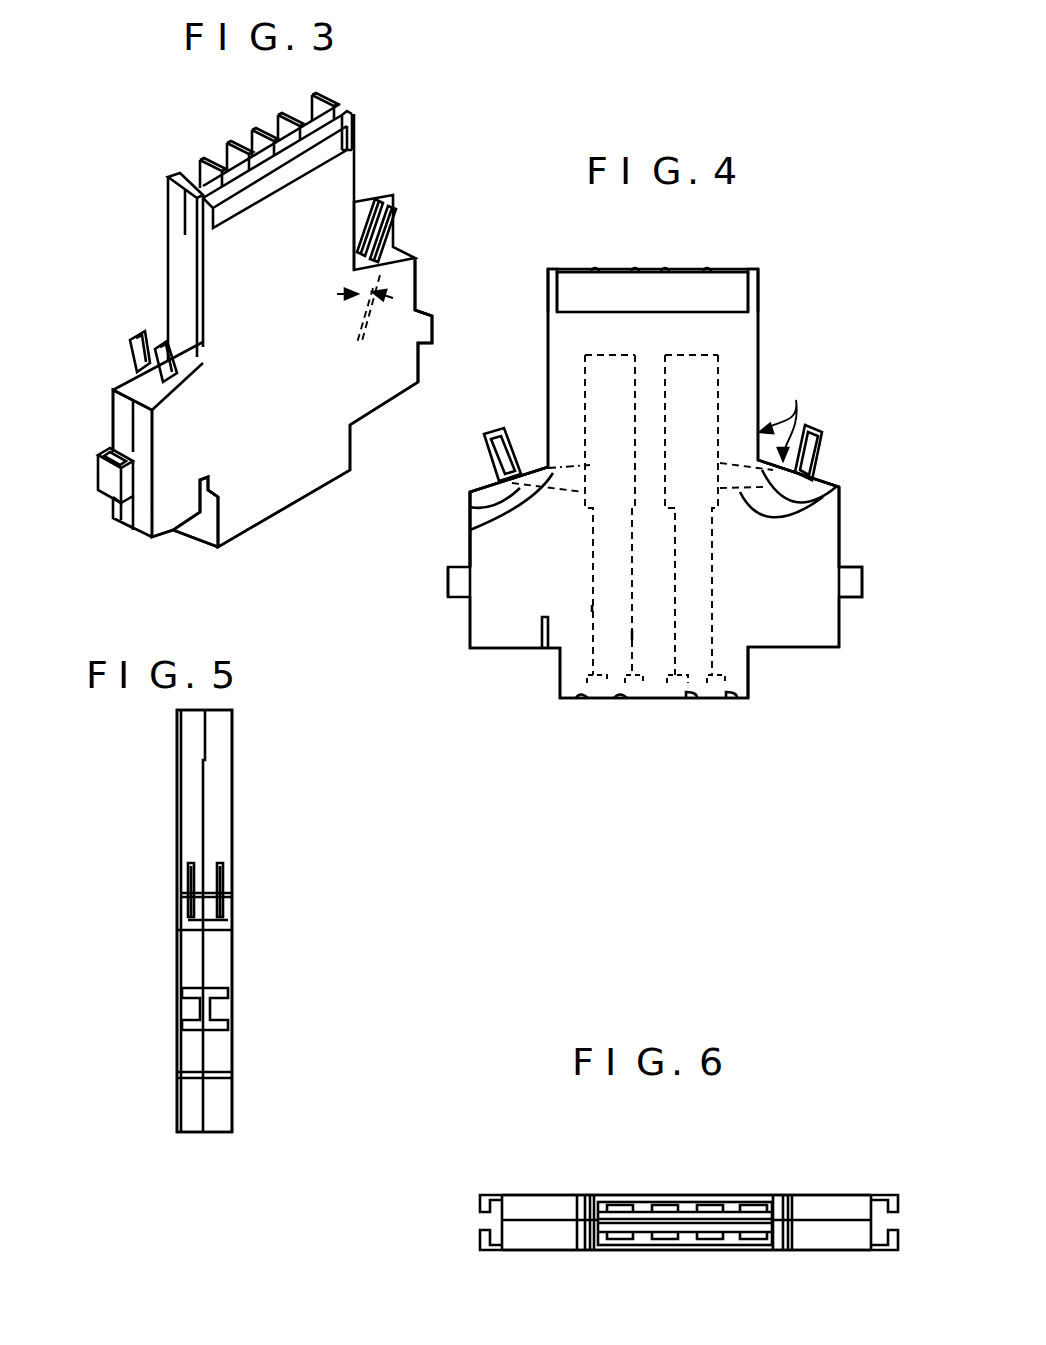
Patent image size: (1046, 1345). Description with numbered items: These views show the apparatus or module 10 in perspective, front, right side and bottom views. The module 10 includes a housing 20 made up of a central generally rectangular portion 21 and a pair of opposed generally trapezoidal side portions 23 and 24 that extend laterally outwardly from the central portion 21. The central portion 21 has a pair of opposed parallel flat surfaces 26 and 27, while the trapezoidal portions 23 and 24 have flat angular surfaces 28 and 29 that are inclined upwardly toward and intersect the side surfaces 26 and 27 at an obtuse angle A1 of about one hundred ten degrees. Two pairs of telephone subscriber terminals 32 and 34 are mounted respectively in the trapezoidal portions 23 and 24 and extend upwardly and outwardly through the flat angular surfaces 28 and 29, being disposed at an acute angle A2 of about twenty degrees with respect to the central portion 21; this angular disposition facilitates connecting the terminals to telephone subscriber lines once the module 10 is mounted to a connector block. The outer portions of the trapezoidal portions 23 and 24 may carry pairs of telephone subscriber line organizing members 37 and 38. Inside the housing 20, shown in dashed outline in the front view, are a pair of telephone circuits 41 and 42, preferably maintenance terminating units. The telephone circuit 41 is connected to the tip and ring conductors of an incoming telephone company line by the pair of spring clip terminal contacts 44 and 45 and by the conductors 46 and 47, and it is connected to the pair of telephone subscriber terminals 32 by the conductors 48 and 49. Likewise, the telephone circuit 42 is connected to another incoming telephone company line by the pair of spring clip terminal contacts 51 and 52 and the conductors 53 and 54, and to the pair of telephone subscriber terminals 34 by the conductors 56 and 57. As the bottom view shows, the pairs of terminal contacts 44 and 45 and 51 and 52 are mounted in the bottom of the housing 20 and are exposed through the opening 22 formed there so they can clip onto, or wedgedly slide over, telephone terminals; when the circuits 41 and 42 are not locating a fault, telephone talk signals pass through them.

In FIG. 3, the apparatus or module 10 is at (118, 203).
In FIG. 4, the apparatus or module 10 is at (810, 278).
In FIG. 5, the apparatus or module 10 is at (262, 742).
In FIG. 6, the apparatus or module 10 is at (858, 1170).
In FIG. 3, the housing 20 is at (420, 262).
In FIG. 4, the housing 20 is at (545, 361).
In FIG. 5, the housing 20 is at (170, 950).
In FIG. 6, the housing 20 is at (798, 1190).
In FIG. 3, the central generally rectangular portion 21 is at (297, 235).
In FIG. 4, the central generally rectangular portion 21 is at (735, 345).
In FIG. 6, the opening 22 is at (681, 1217).
In FIG. 3, the trapezoidal side portion 23 is at (180, 518).
In FIG. 4, the trapezoidal side portion 23 is at (503, 547).
In FIG. 3, the trapezoidal side portion 24 is at (373, 373).
In FIG. 4, the trapezoidal side portion 24 is at (790, 537).
In FIG. 3, the flat surface 26 is at (177, 258).
In FIG. 4, the flat surface 26 is at (548, 322).
In FIG. 3, the flat surface 27 is at (358, 138).
In FIG. 4, the flat surface 27 is at (758, 298).
In FIG. 5, the flat surface 27 is at (208, 808).
In FIG. 4, the flat angular surface 28 is at (483, 485).
In FIG. 4, the flat angular surface 29 is at (818, 482).
In FIG. 3, the pair of telephone subscriber terminals 32 is at (135, 364).
In FIG. 4, the pair of telephone subscriber terminals 32 is at (492, 435).
In FIG. 3, the pair of telephone subscriber terminals 34 is at (392, 247).
In FIG. 4, the pair of telephone subscriber terminals 34 is at (805, 432).
In FIG. 5, the pair of telephone subscriber terminals 34 is at (227, 865).
In FIG. 3, the telephone subscriber line organizing member 37 is at (98, 466).
In FIG. 6, the telephone subscriber line organizing member 37 is at (480, 1204).
In FIG. 3, the telephone subscriber line organizing member 38 is at (125, 490).
In FIG. 6, the telephone subscriber line organizing member 38 is at (480, 1238).
In FIG. 4, the telephone circuit 41 is at (585, 408).
In FIG. 4, the telephone circuit 42 is at (720, 380).
In FIG. 4, the spring clip terminal contact 44 is at (577, 700).
In FIG. 6, the spring clip terminal contact 44 is at (647, 1172).
In FIG. 4, the spring clip terminal contact 45 is at (616, 700).
In FIG. 6, the spring clip terminal contact 45 is at (660, 1243).
In FIG. 4, the conductor 46 is at (592, 605).
In FIG. 4, the conductor 47 is at (632, 630).
In FIG. 4, the conductor 48 is at (470, 502).
In FIG. 4, the conductor 49 is at (470, 535).
In FIG. 4, the spring clip terminal contact 51 is at (693, 700).
In FIG. 6, the spring clip terminal contact 51 is at (742, 1175).
In FIG. 4, the spring clip terminal contact 52 is at (733, 700).
In FIG. 6, the spring clip terminal contact 52 is at (758, 1240).
In FIG. 4, the conductor 53 is at (713, 582).
In FIG. 4, the conductor 54 is at (677, 640).
In FIG. 4, the conductor 56 is at (815, 480).
In FIG. 4, the conductor 57 is at (832, 488).
In FIG. 4, the obtuse angle A1 is at (786, 417).
In FIG. 3, the acute angle A2 is at (357, 300).